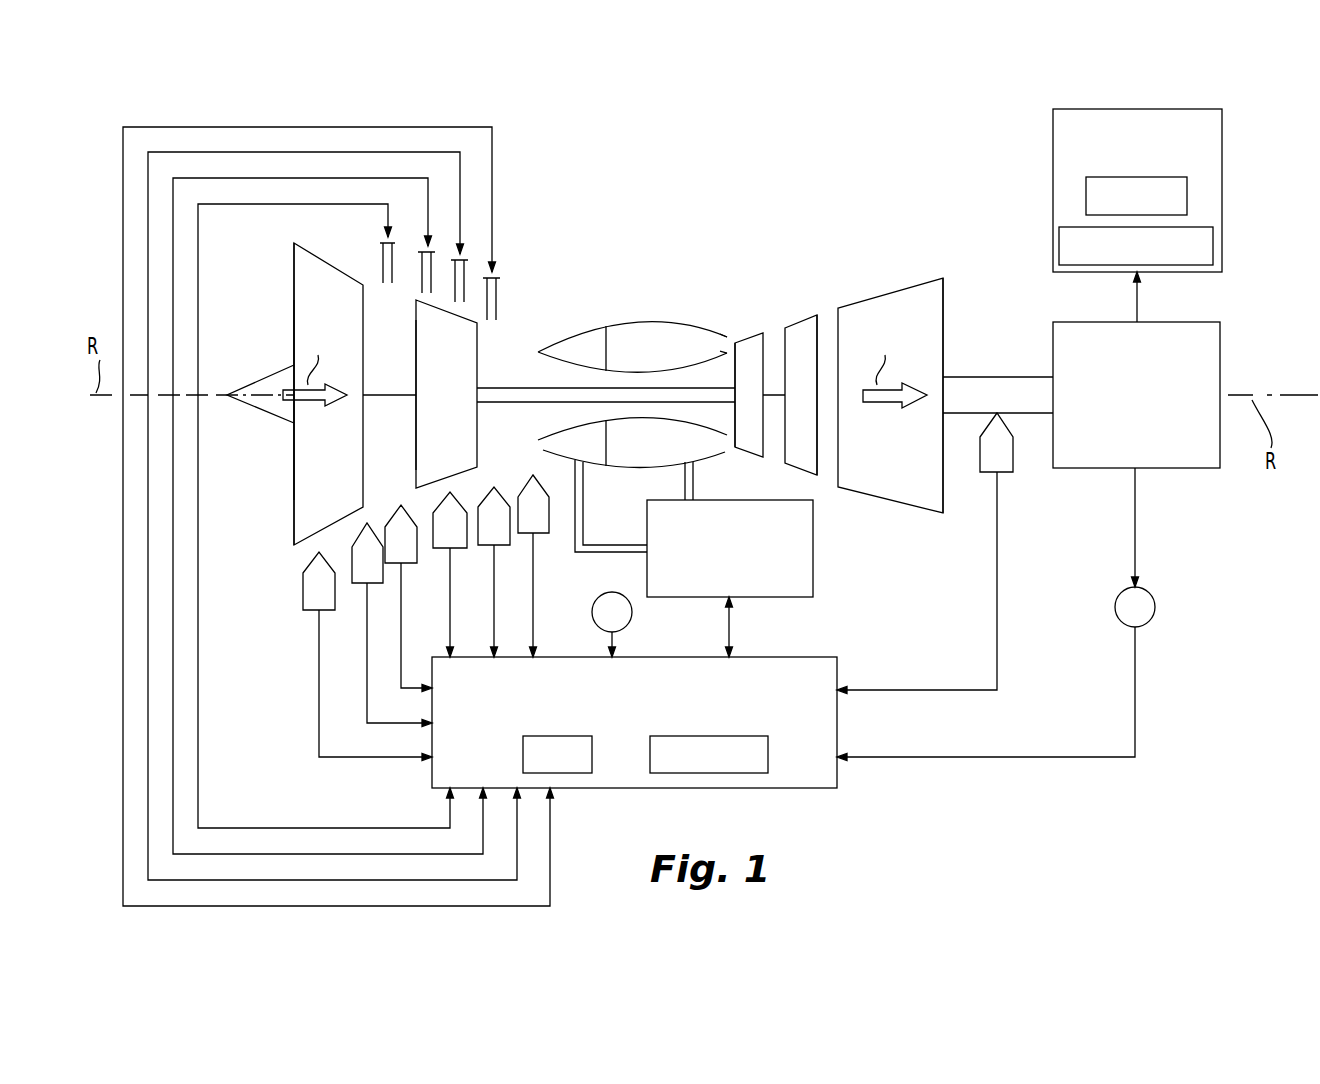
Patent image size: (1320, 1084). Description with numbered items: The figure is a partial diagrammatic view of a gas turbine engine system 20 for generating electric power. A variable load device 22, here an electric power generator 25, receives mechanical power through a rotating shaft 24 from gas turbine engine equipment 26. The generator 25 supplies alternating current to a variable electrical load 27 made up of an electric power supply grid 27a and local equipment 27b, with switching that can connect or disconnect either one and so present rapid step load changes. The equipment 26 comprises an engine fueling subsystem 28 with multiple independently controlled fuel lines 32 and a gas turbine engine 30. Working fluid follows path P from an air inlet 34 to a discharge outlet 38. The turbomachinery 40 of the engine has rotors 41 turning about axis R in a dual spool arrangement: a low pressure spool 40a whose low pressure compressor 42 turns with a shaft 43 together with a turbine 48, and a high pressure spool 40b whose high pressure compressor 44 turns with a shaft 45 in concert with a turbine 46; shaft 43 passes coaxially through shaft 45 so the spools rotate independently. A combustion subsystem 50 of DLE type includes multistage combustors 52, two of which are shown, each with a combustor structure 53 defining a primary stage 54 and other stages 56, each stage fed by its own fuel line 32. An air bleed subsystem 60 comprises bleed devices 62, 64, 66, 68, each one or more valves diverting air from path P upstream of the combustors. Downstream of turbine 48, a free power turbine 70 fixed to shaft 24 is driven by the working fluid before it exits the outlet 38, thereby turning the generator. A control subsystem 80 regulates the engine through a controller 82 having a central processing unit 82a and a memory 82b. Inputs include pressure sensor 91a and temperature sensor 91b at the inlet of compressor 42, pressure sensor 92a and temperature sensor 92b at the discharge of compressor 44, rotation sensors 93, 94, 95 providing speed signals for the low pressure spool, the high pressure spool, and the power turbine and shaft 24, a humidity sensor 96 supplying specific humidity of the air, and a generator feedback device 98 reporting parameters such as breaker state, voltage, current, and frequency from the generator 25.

The gas turbine engine system 20 is at (1240, 153).
The variable load device 22 is at (1200, 318).
The rotating shaft 24 is at (1002, 376).
The electric power generator 25 is at (1146, 437).
The gas turbine engine equipment 26 is at (917, 203).
The variable electrical load 27 is at (1130, 215).
The electric power supply grid 27a is at (1187, 195).
The local equipment 27b is at (1213, 243).
The engine fueling subsystem 28 is at (813, 590).
The gas turbine engine 30 is at (808, 290).
The fuel lines 32 is at (575, 483).
The air inlet 34 is at (268, 513).
The discharge outlet 38 is at (968, 313).
The turbomachinery 40 is at (585, 285).
The low pressure spool 40a is at (294, 490).
The high pressure spool 40b is at (416, 430).
The rotors 41 is at (294, 297).
The low pressure compressor 42 is at (341, 467).
The low pressure shaft 43 is at (377, 393).
The high pressure compressor 44 is at (459, 443).
The high pressure shaft 45 is at (493, 388).
The high pressure turbine 46 is at (755, 337).
The low pressure turbine 48 is at (814, 358).
The combustion subsystem 50 is at (635, 376).
The multistage combustors 52 is at (625, 322).
The combustor structure 53 is at (710, 330).
The primary stage 54 is at (599, 357).
The other stages 56 is at (666, 357).
The air bleed subsystem 60 is at (518, 240).
The bleed device 62 is at (382, 248).
The bleed device 64 is at (421, 262).
The bleed device 66 is at (466, 272).
The bleed device 68 is at (498, 296).
The free power turbine 70 is at (903, 443).
The control subsystem 80 is at (295, 712).
The controller 82 is at (756, 698).
The central processing unit 82a is at (523, 755).
The memory 82b is at (769, 746).
The pressure sensor 91a is at (360, 586).
The temperature sensor 91b is at (388, 528).
The pressure sensor 92a is at (483, 500).
The temperature sensor 92b is at (539, 535).
The low pressure spool rotation sensor 93 is at (303, 593).
The high pressure spool rotation sensor 94 is at (440, 550).
The power turbine rotation sensor 95 is at (1013, 463).
The humidity sensor 96 is at (632, 616).
The generator feedback device 98 is at (1115, 605).